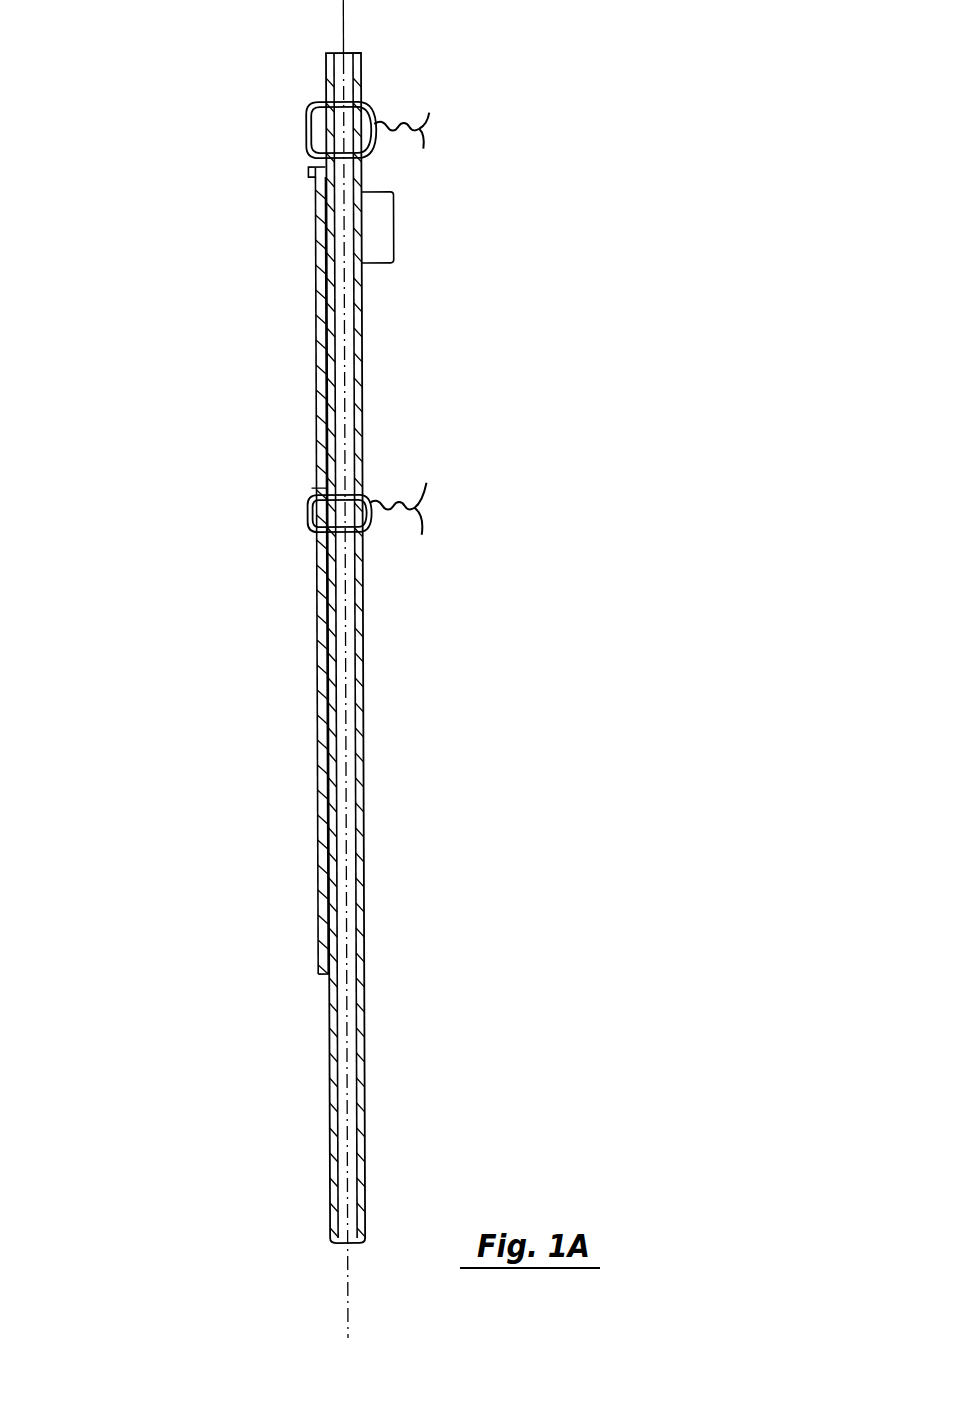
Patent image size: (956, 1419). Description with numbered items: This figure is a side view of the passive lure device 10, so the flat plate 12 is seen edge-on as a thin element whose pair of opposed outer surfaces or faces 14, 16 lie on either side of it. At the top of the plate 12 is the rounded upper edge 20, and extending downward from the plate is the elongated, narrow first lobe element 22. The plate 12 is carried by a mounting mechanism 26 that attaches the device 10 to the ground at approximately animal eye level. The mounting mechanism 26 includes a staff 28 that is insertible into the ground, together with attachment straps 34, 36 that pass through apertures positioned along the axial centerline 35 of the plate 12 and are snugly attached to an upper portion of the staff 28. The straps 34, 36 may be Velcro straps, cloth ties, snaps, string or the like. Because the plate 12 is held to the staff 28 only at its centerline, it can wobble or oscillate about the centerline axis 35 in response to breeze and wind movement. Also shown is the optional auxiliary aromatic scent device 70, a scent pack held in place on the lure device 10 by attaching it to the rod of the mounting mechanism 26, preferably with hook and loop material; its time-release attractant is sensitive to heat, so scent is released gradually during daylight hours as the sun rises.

The passive lure device 10 is at (230, 222).
The flat plate 12 is at (315, 218).
The outer surface 14 is at (315, 350).
The outer surface 16 is at (337, 375).
The rounded upper edge 20 is at (315, 288).
The first lobe element 22 is at (320, 888).
The mounting mechanism 26 is at (368, 1040).
The staff 28 is at (363, 802).
The attachment strap 34 is at (372, 122).
The axial centerline 35 is at (342, 13).
The attachment strap 36 is at (368, 513).
The auxiliary aromatic scent device 70 is at (383, 237).